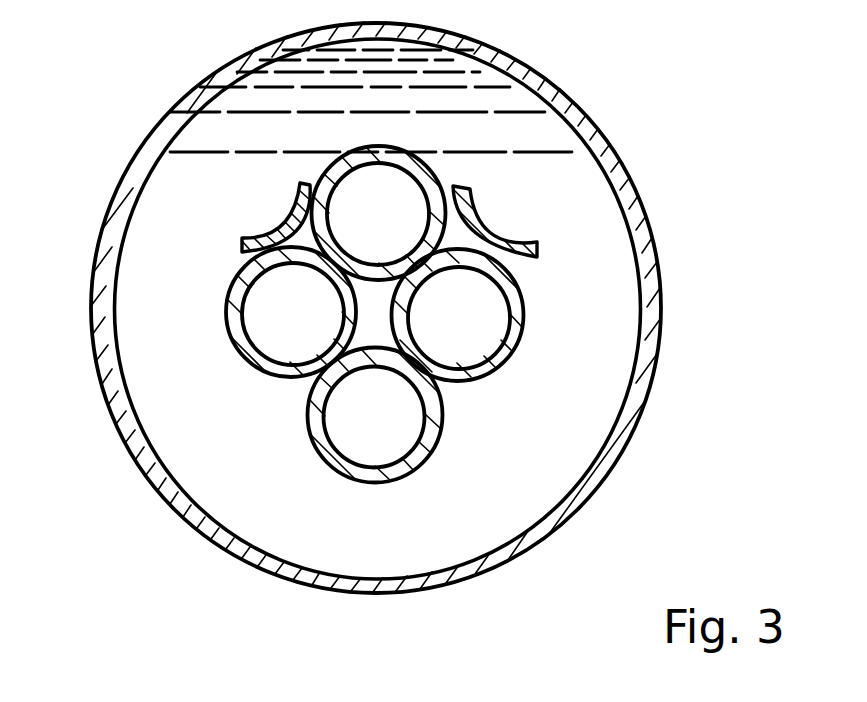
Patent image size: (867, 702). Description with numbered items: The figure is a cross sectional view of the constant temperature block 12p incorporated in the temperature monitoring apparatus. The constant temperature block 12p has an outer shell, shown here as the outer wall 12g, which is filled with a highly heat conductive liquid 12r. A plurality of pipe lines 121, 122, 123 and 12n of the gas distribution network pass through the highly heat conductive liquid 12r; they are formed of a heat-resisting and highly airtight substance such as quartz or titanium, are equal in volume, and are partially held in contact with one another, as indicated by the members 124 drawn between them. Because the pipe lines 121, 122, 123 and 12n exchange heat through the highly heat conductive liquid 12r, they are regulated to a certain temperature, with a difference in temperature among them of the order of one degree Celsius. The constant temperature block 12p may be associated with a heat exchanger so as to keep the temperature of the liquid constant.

The constant temperature block 12p is at (391, 347).
The outer tube wall 12g is at (641, 201).
The pipe line 12n is at (418, 161).
The highly heat conductive liquid 12r is at (575, 363).
The pipe line 121 is at (405, 480).
The pipe line 122 is at (490, 375).
The pipe line 123 is at (242, 360).
The retaining clips 124 is at (258, 236).